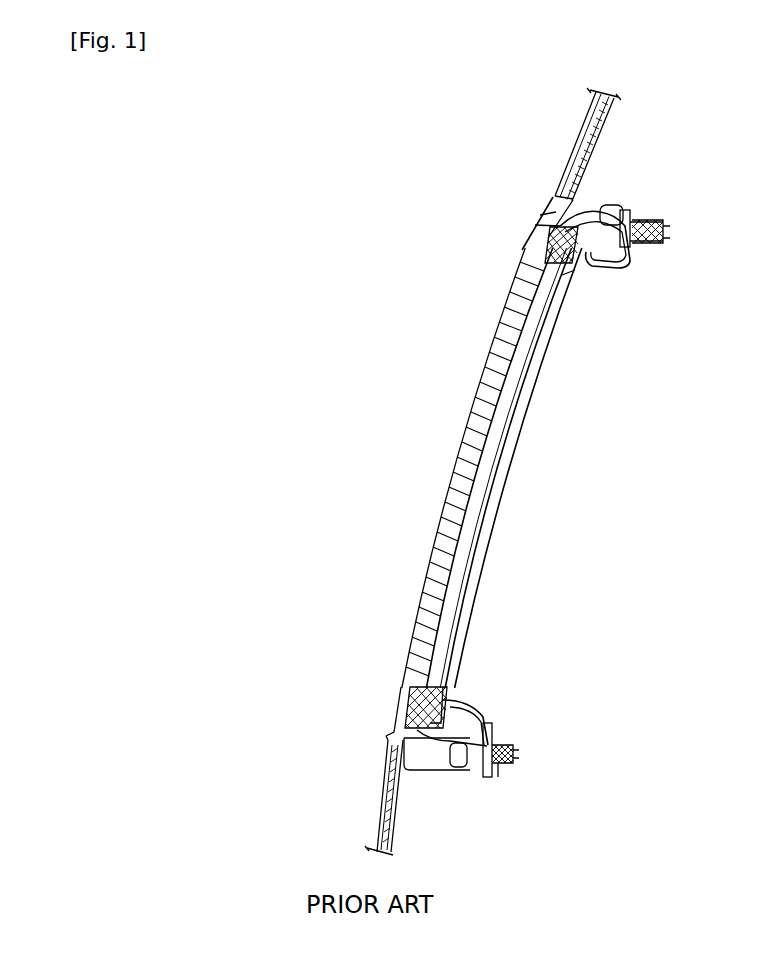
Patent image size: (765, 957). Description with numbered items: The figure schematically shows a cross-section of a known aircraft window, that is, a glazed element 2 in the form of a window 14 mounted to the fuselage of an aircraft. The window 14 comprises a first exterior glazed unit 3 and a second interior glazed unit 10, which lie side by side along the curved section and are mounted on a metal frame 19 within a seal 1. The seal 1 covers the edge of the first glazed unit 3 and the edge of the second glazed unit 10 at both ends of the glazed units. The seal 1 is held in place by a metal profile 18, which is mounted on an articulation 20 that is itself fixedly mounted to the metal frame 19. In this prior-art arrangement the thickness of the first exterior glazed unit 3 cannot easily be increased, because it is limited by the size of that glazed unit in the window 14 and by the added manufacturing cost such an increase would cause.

The seal 1 is at (538, 248).
The glazed element 2 is at (453, 468).
The first exterior glazed unit 3 is at (500, 352).
The second interior glazed unit 10 is at (537, 377).
The window 14 is at (425, 413).
The metal profile 18 is at (620, 276).
The metal frame 19 is at (575, 207).
The articulation 20 is at (637, 216).